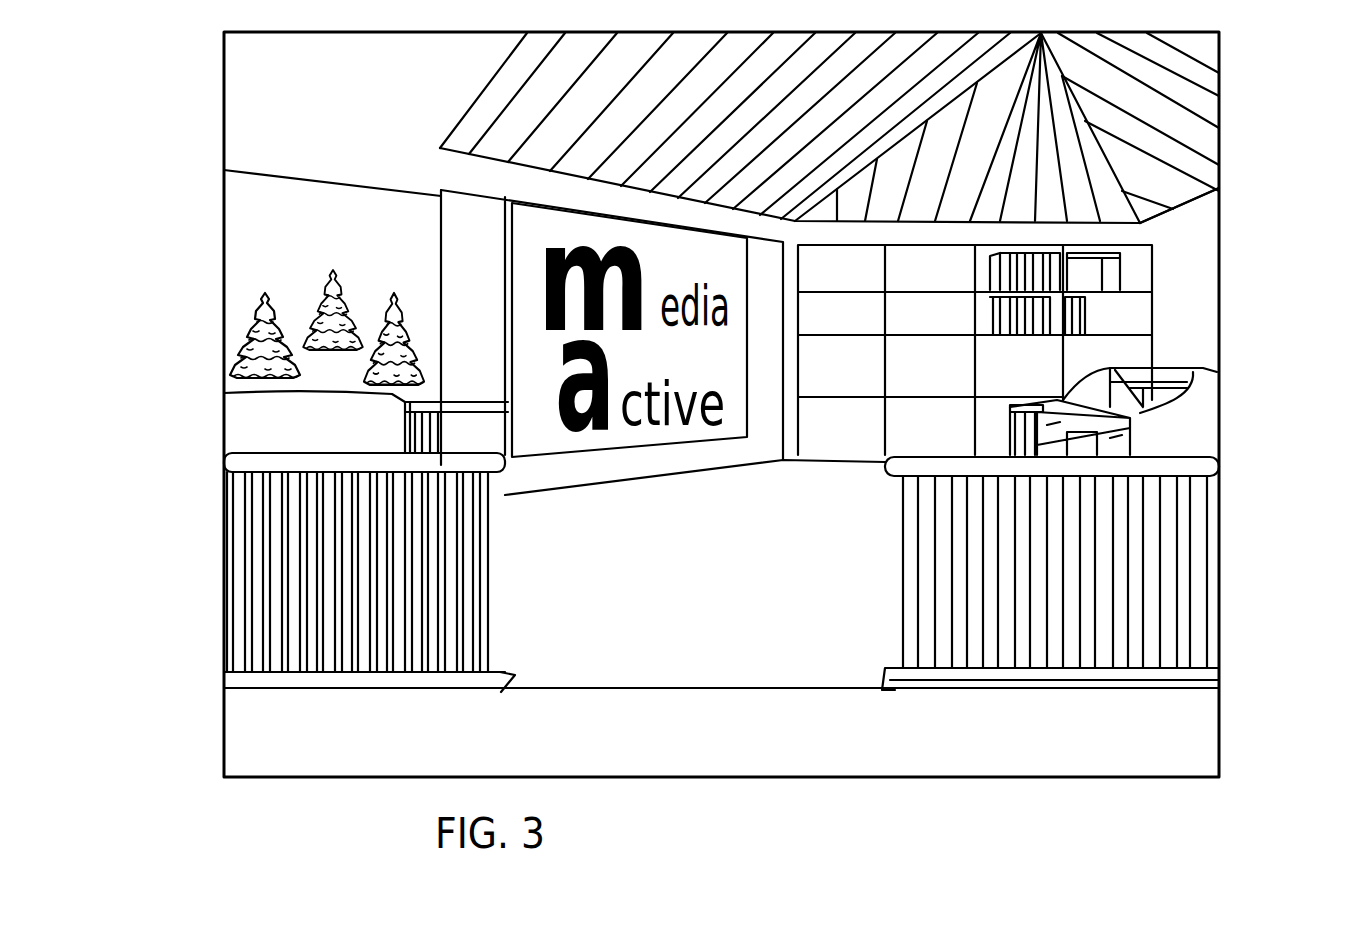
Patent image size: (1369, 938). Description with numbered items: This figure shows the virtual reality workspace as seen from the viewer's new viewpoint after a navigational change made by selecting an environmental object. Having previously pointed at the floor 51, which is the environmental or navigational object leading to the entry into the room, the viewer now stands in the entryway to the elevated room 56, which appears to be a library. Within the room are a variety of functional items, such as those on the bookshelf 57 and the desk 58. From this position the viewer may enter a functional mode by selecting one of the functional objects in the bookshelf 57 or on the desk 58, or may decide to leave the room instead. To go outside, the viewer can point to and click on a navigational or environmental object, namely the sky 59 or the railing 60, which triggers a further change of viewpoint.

The floor 51 is at (718, 602).
The elevated room 56 is at (1193, 270).
The bookshelf 57 is at (1118, 265).
The desk 58 is at (1113, 407).
The sky 59 is at (349, 227).
The railing 60 is at (463, 408).